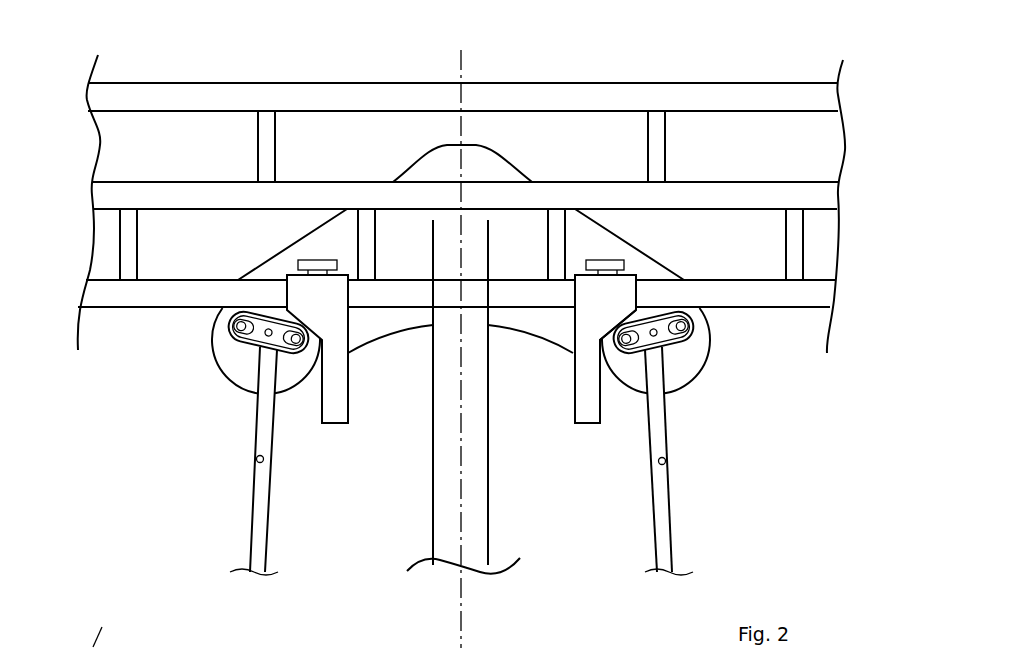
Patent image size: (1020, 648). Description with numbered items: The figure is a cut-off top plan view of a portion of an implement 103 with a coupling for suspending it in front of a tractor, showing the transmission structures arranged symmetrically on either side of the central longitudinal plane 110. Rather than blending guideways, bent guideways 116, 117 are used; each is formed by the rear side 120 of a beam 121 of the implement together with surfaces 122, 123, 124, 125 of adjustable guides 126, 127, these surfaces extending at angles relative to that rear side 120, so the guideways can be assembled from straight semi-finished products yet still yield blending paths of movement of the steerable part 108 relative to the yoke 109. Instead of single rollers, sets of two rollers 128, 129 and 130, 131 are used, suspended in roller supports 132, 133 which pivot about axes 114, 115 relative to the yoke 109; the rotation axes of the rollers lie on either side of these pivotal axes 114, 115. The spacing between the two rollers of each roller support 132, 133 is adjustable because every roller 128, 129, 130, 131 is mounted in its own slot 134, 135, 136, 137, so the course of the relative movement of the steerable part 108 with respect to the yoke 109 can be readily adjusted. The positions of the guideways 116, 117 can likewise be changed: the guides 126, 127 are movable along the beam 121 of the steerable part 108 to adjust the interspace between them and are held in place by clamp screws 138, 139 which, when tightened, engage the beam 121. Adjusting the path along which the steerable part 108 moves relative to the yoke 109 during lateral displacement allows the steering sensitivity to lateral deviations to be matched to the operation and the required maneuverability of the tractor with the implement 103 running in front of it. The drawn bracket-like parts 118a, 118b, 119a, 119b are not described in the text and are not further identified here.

The implement 103 is at (366, 79).
The steerable part 108 is at (98, 310).
The yoke 109 is at (407, 337).
The central longitudinal plane 110 is at (462, 72).
The pivotal axis 114 is at (267, 325).
The pivotal axis 115 is at (657, 330).
The bent guideway 116 is at (160, 312).
The bent guideway 117 is at (641, 355).
The link plate 118a is at (240, 289).
The bracket 118b is at (341, 363).
The link plate 119a is at (696, 307).
The bracket 119b is at (583, 362).
The rear side 120 is at (195, 309).
The beam 121 is at (150, 297).
The surface 122 is at (317, 345).
The surface 123 is at (603, 342).
The surface 124 is at (323, 425).
The surface 125 is at (612, 418).
The adjustable guide 126 is at (339, 382).
The adjustable guide 127 is at (580, 383).
The roller 128 is at (233, 312).
The roller 129 is at (288, 323).
The roller 130 is at (699, 333).
The roller 131 is at (635, 322).
The roller support 132 is at (260, 344).
The roller support 133 is at (667, 347).
The slot 134 is at (248, 335).
The slot 135 is at (283, 352).
The slot 136 is at (668, 322).
The slot 137 is at (632, 461).
The clamp screw 138 is at (323, 259).
The clamp screw 139 is at (600, 259).